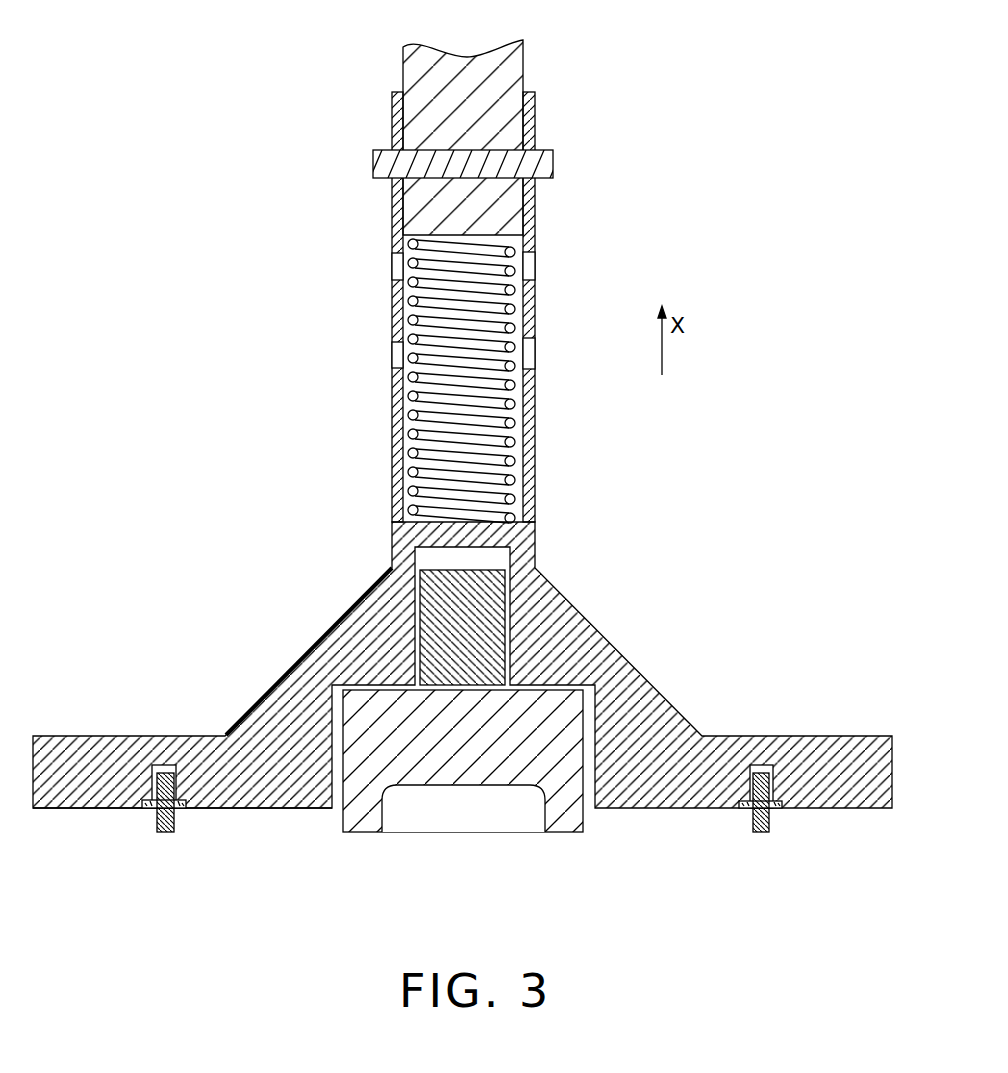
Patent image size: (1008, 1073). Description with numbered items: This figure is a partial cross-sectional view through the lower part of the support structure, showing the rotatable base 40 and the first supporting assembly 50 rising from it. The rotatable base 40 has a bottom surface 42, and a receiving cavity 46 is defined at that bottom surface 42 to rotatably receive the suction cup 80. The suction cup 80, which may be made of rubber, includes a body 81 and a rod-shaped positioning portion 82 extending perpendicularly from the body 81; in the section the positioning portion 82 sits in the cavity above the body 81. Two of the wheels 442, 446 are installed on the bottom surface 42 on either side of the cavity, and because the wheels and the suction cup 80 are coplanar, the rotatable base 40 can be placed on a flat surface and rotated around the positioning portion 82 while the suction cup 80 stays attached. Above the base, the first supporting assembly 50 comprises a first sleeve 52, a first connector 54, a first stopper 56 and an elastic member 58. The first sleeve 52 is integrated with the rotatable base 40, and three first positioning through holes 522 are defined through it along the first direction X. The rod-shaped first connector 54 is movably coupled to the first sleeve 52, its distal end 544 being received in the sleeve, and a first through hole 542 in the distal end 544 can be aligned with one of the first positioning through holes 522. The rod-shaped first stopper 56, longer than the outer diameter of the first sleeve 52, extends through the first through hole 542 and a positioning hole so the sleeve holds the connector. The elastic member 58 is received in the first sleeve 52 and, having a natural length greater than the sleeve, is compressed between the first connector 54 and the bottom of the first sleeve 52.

The rotatable base 40 is at (826, 748).
The bottom surface 42 is at (105, 814).
The wheel 442 is at (166, 832).
The wheel 446 is at (758, 832).
The receiving cavity 46 is at (587, 710).
The first supporting assembly 50 is at (479, 276).
The first sleeve 52 is at (442, 299).
The first positioning through holes 522 is at (397, 353).
The first connector 54 is at (487, 133).
The first through hole 542 is at (442, 148).
The distal end 544 is at (510, 142).
The first stopper 56 is at (542, 167).
The elastic member 58 is at (503, 283).
The suction cup 80 is at (519, 701).
The body 81 is at (518, 712).
The positioning portion 82 is at (473, 637).